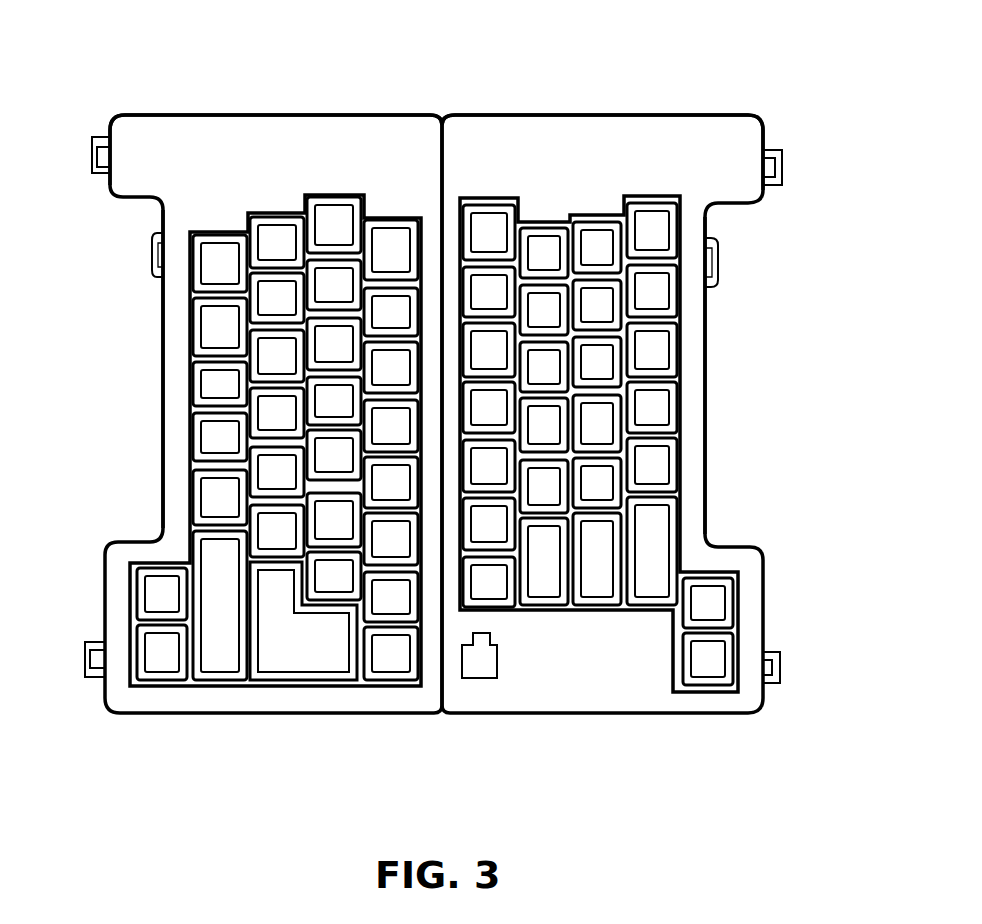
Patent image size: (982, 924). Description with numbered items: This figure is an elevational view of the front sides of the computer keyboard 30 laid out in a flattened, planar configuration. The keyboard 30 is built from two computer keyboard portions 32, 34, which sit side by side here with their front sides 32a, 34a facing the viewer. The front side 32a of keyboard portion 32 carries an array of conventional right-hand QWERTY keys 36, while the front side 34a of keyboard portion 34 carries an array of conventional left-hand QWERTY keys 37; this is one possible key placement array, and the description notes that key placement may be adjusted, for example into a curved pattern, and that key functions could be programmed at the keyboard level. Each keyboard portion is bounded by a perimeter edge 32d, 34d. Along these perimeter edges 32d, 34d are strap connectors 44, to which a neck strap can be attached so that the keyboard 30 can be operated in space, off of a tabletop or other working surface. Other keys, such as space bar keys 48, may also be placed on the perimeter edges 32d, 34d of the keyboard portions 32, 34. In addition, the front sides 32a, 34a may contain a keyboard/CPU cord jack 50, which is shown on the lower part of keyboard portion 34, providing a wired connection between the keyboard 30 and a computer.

The computer keyboard 30 is at (85, 613).
The keyboard portion 32 is at (118, 112).
The front side 32a is at (263, 123).
The perimeter edge 32d is at (163, 440).
The keyboard portion 34 is at (753, 116).
The front side 34a is at (571, 130).
The perimeter edge 34d is at (705, 484).
The keys 36 is at (215, 322).
The keys 37 is at (660, 402).
The strap connectors 44 is at (92, 155).
The space bar keys 48 is at (150, 255).
The keyboard/CPU cord jack 50 is at (497, 668).